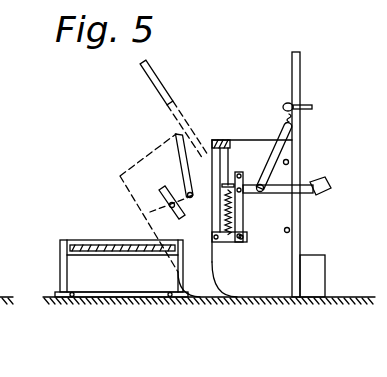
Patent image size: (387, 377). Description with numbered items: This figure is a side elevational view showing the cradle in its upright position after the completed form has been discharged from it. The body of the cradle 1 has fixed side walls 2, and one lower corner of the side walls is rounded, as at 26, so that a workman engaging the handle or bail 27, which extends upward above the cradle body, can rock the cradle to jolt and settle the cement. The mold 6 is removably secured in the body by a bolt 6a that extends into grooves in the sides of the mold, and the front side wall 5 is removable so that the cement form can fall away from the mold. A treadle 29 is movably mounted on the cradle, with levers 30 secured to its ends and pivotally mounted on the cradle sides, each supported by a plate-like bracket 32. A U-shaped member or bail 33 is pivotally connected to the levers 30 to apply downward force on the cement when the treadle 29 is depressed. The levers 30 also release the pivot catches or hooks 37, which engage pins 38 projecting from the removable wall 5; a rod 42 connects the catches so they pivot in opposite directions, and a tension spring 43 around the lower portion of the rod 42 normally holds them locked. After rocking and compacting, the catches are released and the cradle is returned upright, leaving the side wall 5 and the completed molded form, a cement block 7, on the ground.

The body of the cradle 1 is at (248, 138).
The side walls 2 is at (261, 286).
The front side wall 5 is at (123, 297).
The mold 6 is at (79, 240).
The bolt 6a is at (289, 162).
The cement block 7 is at (77, 272).
The rounded lower corner 26 is at (229, 292).
The handle or bail 27 is at (300, 72).
The treadle 29 is at (333, 183).
The levers 30 is at (278, 188).
The plate-like bracket 32 is at (244, 220).
The U-shaped member or bail 33 is at (282, 135).
The pivot catches or hooks 37 is at (216, 139).
The pins 38 is at (71, 299).
The rod 42 is at (217, 165).
The tension spring 43 is at (181, 207).